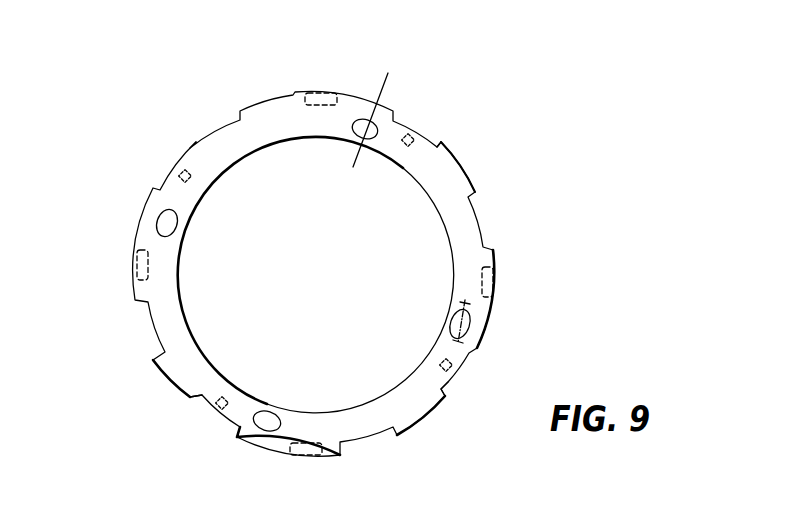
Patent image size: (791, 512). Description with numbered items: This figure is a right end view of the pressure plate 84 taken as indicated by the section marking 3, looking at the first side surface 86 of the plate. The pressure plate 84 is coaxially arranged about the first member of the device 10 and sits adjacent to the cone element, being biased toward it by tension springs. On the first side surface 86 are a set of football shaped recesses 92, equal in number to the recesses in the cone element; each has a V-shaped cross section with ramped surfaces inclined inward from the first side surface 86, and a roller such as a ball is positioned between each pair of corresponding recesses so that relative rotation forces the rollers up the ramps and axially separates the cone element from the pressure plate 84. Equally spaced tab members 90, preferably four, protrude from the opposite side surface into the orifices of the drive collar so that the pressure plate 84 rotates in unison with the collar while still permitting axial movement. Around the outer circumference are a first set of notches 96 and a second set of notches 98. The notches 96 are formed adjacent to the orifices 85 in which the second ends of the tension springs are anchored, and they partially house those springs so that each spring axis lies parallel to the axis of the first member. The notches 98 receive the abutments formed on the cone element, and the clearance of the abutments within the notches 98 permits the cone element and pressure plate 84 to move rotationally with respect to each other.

The pressure plate 84 is at (486, 115).
The first side surface 86 is at (446, 181).
The second set of notches 98 is at (263, 112).
The tab members 90 is at (307, 91).
The football shaped recesses 92 is at (358, 133).
The first set of notches 96 is at (187, 160).
The orifice 85 is at (190, 180).
The apparatus 10 is at (463, 307).
The section line 3 is at (398, 81).